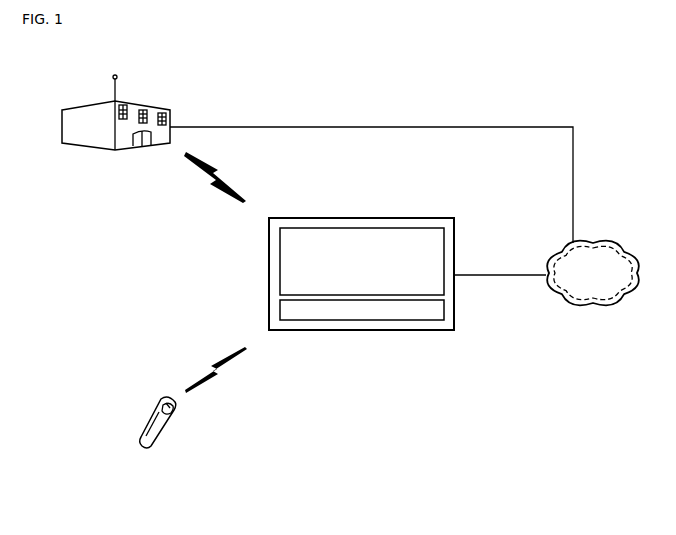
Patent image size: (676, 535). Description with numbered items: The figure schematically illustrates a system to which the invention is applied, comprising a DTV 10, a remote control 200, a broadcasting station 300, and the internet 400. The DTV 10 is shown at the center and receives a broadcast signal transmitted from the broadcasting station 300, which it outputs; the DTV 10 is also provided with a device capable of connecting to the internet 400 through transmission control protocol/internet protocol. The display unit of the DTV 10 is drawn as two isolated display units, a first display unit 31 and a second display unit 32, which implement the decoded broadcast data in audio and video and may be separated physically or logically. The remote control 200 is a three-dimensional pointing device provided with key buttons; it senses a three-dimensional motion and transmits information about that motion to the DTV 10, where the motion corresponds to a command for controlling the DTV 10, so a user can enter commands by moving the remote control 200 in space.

The DTV 10 is at (361, 218).
The first display unit 31 is at (280, 310).
The second display unit 32 is at (280, 263).
The remote control 200 is at (146, 450).
The broadcasting station 300 is at (155, 110).
The internet 400 is at (592, 241).